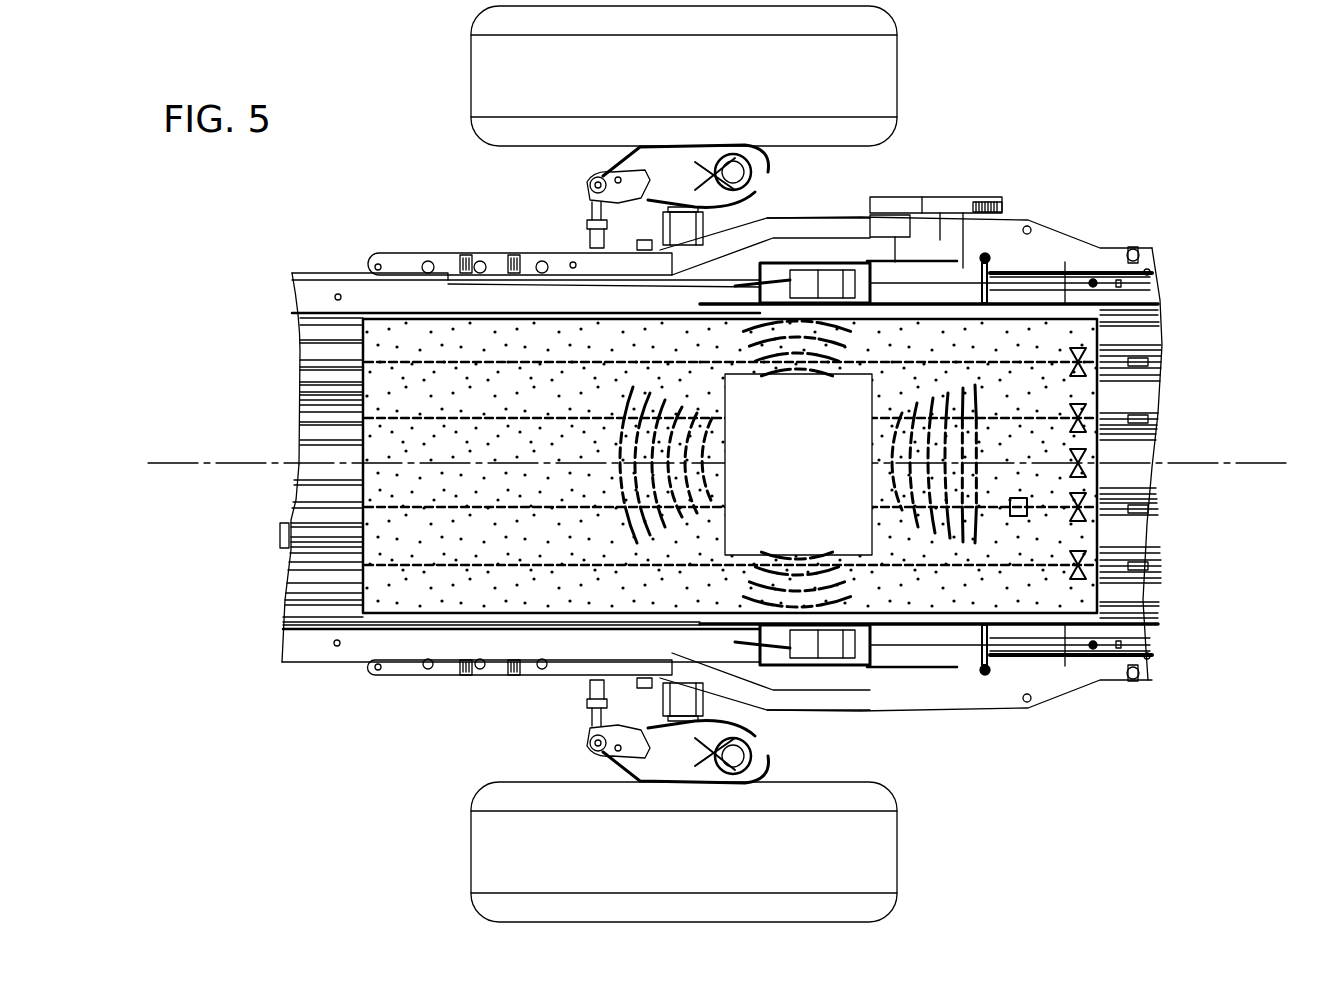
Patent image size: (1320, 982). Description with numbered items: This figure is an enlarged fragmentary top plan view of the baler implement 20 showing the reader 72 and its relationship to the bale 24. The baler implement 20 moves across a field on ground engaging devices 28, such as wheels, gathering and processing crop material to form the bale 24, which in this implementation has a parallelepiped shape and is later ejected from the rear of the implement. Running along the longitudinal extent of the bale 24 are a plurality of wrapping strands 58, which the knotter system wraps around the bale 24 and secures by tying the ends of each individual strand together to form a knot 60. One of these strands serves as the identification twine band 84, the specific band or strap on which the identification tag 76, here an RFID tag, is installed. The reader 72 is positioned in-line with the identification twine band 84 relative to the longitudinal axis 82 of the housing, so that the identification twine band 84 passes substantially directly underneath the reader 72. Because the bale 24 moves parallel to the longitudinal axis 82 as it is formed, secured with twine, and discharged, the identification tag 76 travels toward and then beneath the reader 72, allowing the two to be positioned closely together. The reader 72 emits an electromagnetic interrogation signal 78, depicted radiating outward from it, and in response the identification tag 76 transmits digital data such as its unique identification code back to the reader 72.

The baler implement 20 is at (1115, 90).
The bale 24 is at (413, 336).
The ground engaging devices 28 is at (863, 73).
The wrapping strands 58 is at (368, 342).
The knot 60 is at (1094, 418).
The reader 72 is at (810, 449).
The identification tag 76 is at (1097, 518).
The interrogation signal 78 is at (965, 397).
The longitudinal axis 82 is at (1228, 465).
The identification twine band 84 is at (1008, 507).